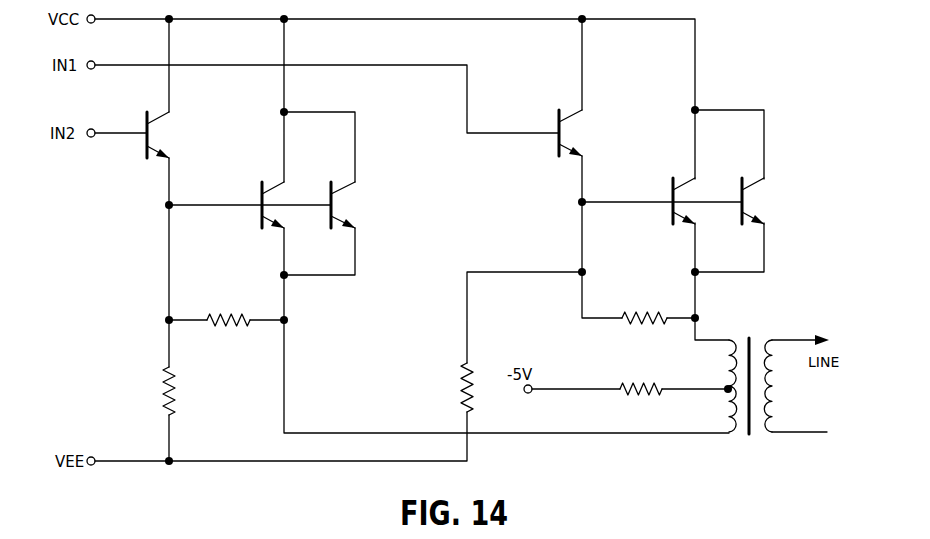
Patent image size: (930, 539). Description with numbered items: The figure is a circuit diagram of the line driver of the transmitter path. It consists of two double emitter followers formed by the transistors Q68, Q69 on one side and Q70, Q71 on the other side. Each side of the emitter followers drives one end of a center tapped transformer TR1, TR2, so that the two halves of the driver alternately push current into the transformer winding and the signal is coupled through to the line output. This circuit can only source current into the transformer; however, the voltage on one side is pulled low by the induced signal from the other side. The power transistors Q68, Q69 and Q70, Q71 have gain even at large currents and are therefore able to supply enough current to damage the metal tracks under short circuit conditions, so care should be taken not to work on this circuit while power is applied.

The power transistor Q68 is at (290, 205).
The power transistor Q69 is at (357, 205).
The power transistor Q70 is at (703, 201).
The power transistor Q71 is at (768, 201).
The center tapped transformer TR1 is at (727, 374).
The center tapped transformer TR2 is at (784, 374).